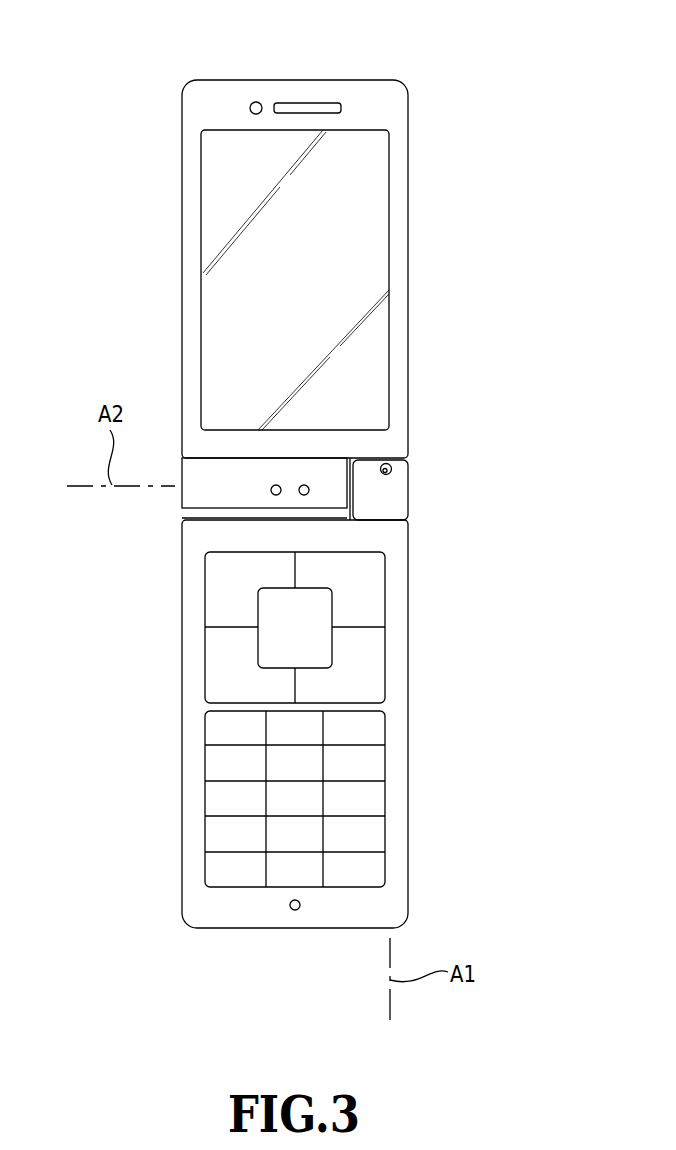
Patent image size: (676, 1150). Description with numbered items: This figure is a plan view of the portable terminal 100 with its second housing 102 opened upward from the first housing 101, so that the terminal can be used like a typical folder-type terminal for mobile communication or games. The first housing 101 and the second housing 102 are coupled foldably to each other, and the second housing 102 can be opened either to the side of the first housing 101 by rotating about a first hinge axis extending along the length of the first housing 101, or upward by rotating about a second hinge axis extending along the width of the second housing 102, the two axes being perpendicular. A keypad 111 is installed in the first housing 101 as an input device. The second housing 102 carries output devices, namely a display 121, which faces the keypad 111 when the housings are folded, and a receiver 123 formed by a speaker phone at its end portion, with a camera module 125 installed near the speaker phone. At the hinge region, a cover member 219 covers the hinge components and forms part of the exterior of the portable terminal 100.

The portable terminal 100 is at (103, 272).
The first housing 101 is at (365, 724).
The second housing 102 is at (364, 229).
The keypad 111 is at (373, 804).
The display 121 is at (372, 243).
The receiver 123 is at (314, 103).
The camera module 125 is at (254, 101).
The cover member 219 is at (397, 495).